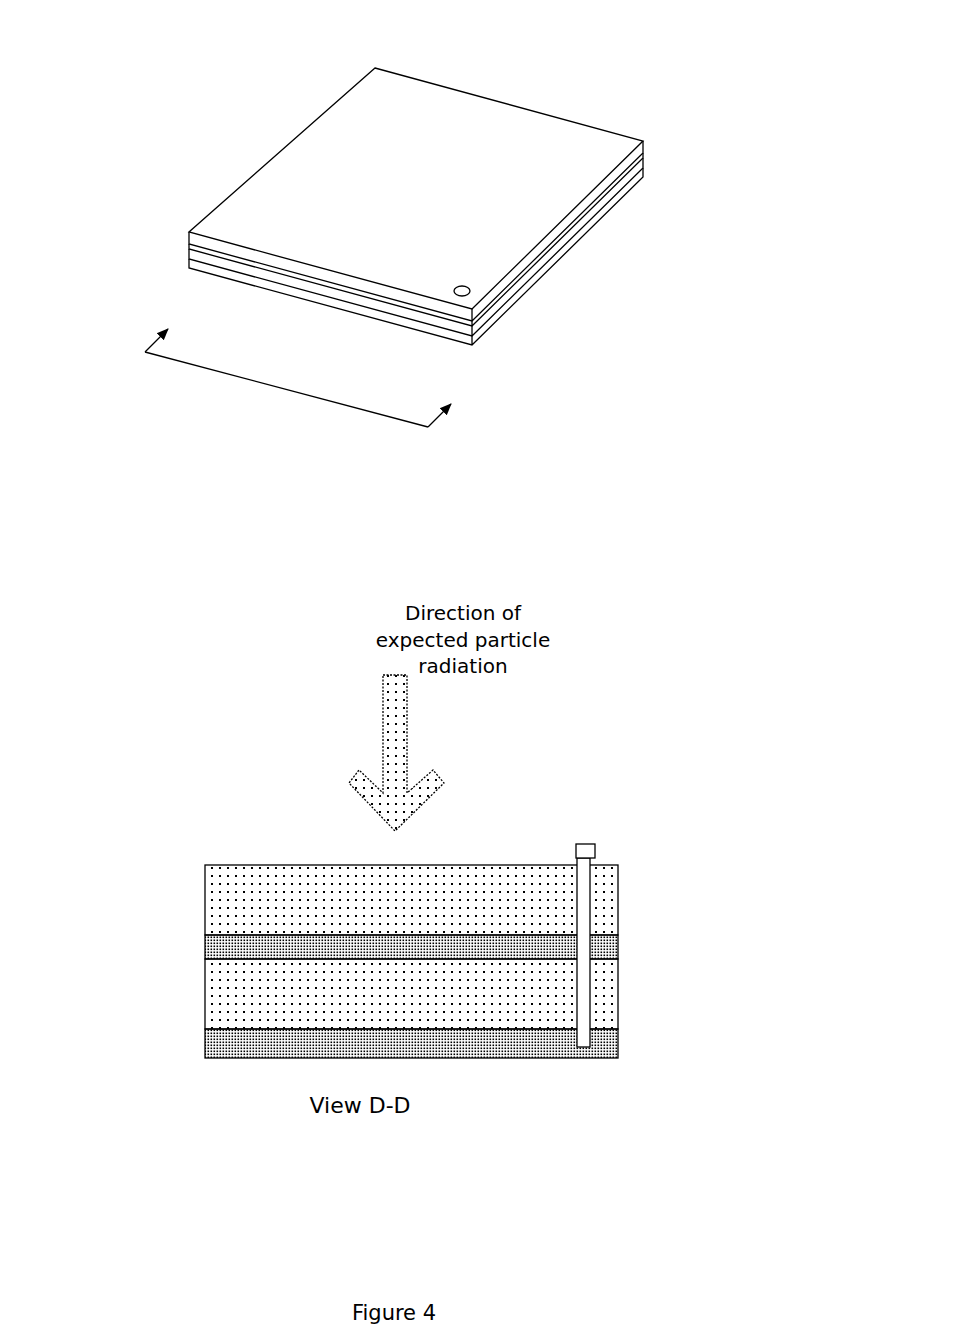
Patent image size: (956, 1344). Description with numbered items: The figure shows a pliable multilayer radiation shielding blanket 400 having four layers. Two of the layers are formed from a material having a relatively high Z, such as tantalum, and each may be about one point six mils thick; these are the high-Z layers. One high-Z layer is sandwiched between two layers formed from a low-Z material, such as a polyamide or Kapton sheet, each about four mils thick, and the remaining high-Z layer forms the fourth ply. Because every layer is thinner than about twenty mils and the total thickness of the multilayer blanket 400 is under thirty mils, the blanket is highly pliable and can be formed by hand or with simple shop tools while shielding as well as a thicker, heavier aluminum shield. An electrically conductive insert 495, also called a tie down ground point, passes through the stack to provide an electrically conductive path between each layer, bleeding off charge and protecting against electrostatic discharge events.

The multilayer blanket 400 is at (146, 37).
The electrically conductive insert 495 is at (595, 844).